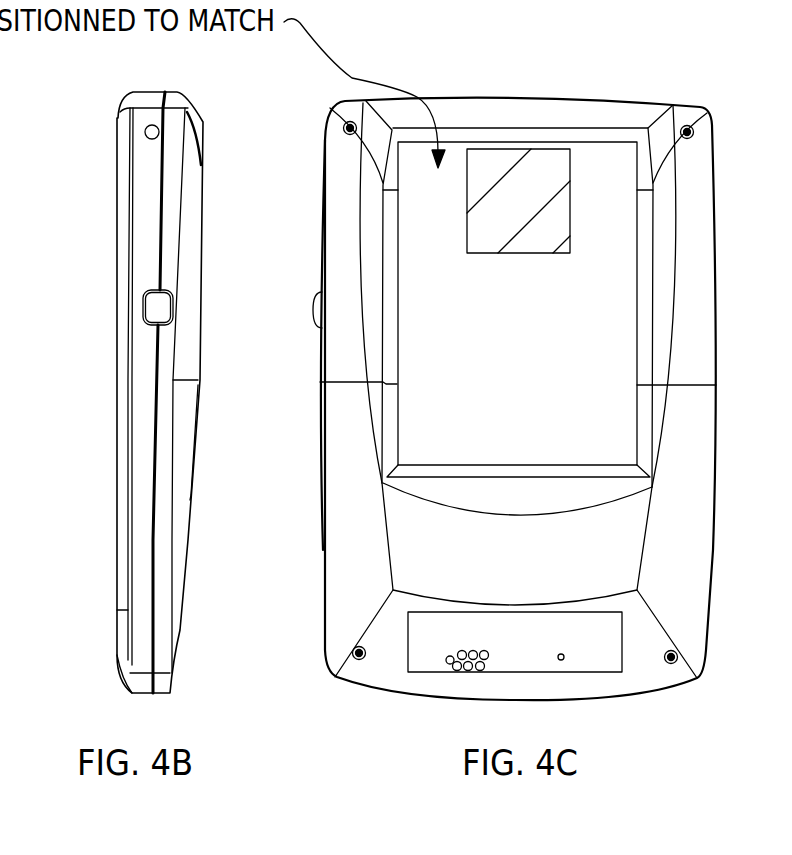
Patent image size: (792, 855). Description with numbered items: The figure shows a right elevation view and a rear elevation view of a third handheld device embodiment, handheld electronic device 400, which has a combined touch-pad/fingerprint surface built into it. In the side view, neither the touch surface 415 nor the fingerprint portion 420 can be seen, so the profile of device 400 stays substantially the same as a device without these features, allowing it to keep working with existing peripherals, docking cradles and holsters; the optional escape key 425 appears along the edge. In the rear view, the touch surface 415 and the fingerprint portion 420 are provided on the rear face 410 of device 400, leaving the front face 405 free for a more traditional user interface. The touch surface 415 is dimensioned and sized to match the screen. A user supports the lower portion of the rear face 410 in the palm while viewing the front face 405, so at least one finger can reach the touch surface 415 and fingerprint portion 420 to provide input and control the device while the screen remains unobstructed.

In FIG. 4B, the handheld electronic device 400 is at (112, 88).
In FIG. 4C, the handheld electronic device 400 is at (620, 90).
In FIG. 4B, the front face 405 is at (137, 465).
In FIG. 4B, the rear face 410 is at (177, 565).
In FIG. 4C, the rear face 410 is at (683, 543).
In FIG. 4C, the touch surface 415 is at (541, 367).
In FIG. 4C, the fingerprint portion 420 is at (505, 178).
In FIG. 4B, the escape key 425 is at (160, 307).
In FIG. 4C, the escape key 425 is at (312, 308).